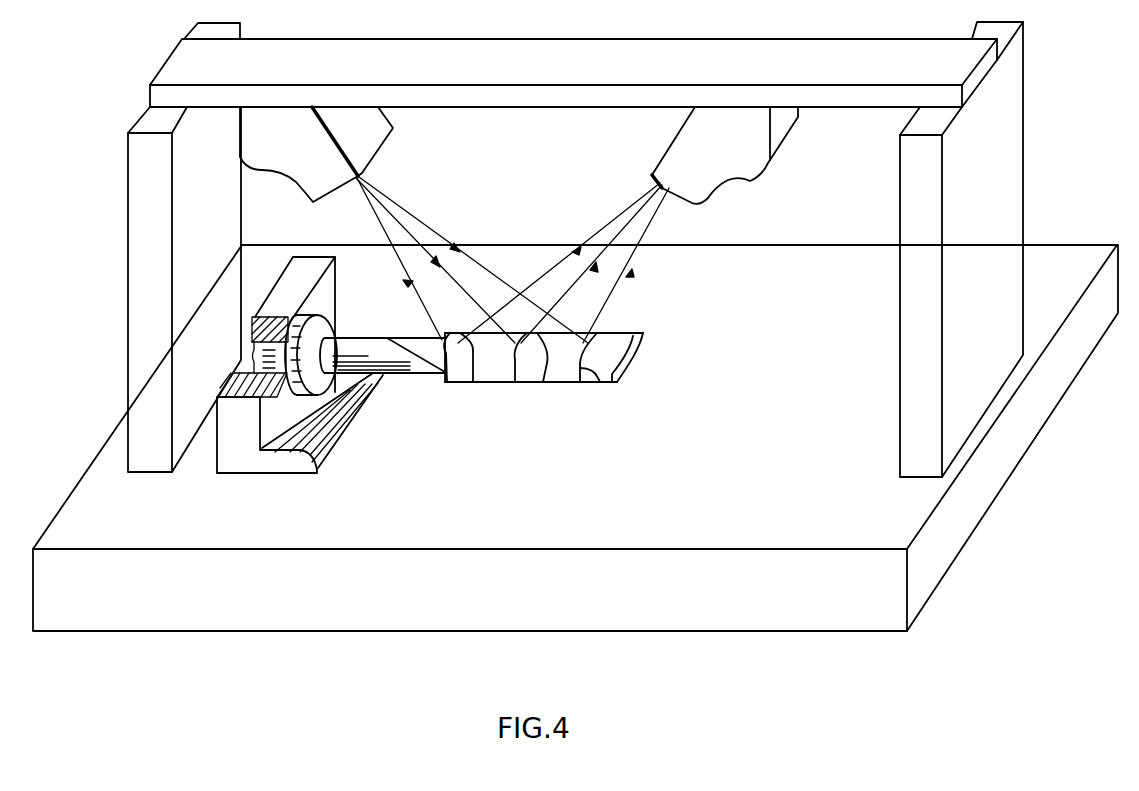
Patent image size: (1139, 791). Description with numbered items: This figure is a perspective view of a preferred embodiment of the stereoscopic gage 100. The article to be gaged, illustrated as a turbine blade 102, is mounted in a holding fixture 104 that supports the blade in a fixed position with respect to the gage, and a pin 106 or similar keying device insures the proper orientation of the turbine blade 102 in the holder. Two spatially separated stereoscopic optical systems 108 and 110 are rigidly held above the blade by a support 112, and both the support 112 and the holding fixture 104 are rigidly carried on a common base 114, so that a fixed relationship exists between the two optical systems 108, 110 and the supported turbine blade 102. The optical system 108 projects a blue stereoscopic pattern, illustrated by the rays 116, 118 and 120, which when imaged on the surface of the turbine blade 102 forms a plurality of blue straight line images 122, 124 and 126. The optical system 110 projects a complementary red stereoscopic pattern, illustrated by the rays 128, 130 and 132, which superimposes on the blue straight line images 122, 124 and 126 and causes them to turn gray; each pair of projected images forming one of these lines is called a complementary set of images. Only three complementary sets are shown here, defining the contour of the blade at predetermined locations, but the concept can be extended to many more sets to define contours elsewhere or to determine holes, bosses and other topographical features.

The stereoscopic gage 100 is at (88, 314).
The turbine blade 102 is at (413, 376).
The holding fixture 104 is at (267, 467).
The pin 106 is at (283, 316).
The stereoscopic optical system 108 is at (365, 147).
The stereoscopic optical system 110 is at (733, 172).
The support 112 is at (695, 40).
The common base 114 is at (841, 504).
The ray 116 is at (397, 270).
The ray 118 is at (471, 309).
The ray 120 is at (432, 225).
The straight line image 122 is at (473, 382).
The straight line image 124 is at (543, 382).
The straight line image 126 is at (600, 382).
The ray 128 is at (548, 267).
The ray 130 is at (560, 303).
The ray 132 is at (617, 293).